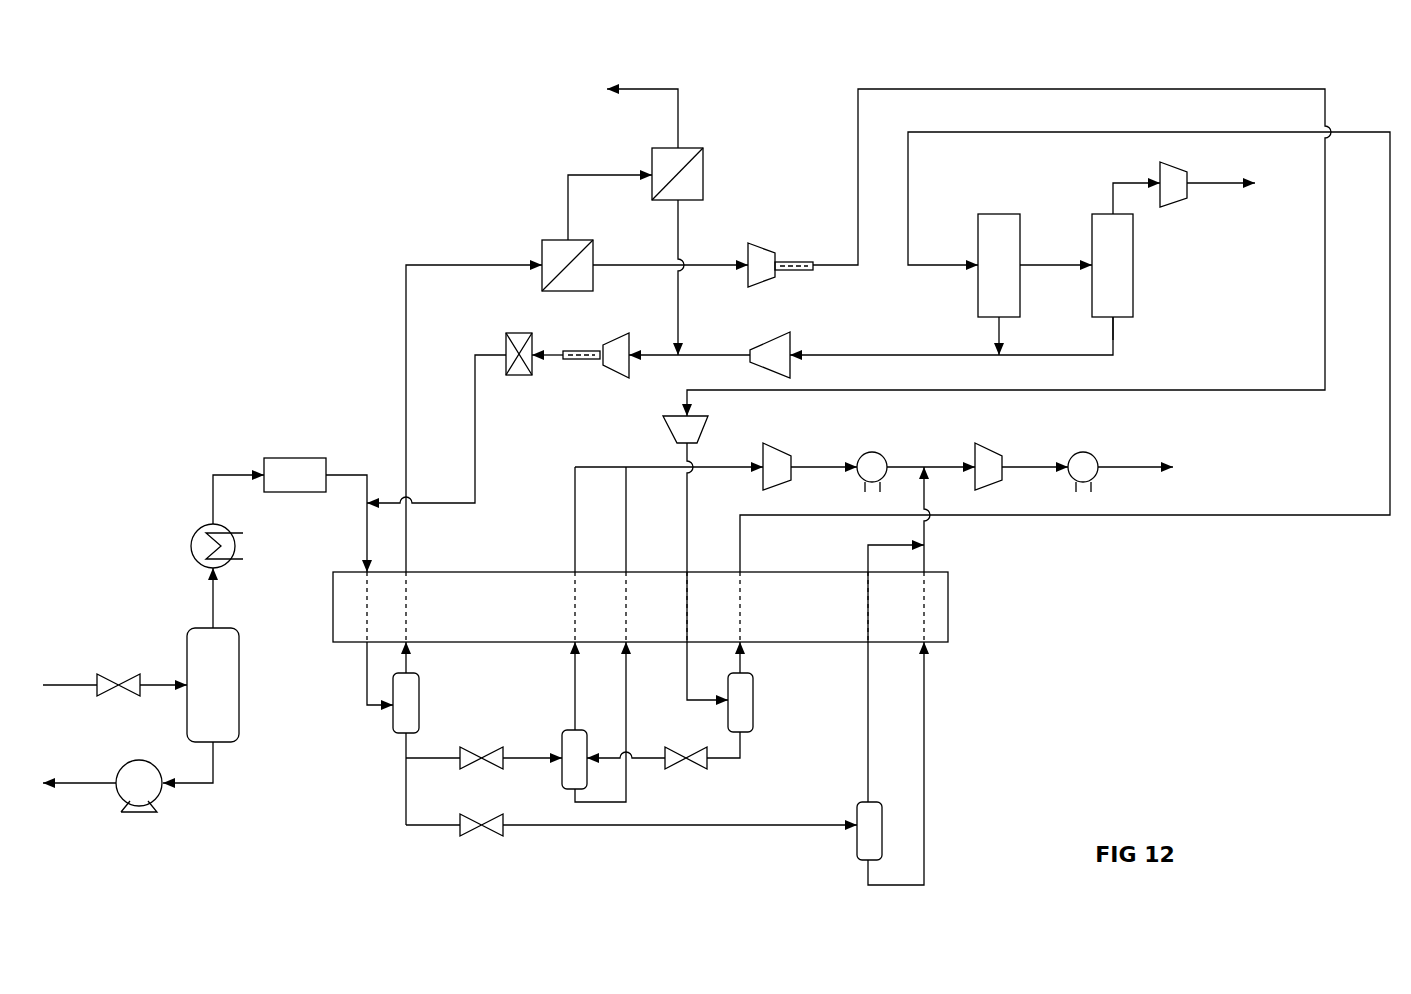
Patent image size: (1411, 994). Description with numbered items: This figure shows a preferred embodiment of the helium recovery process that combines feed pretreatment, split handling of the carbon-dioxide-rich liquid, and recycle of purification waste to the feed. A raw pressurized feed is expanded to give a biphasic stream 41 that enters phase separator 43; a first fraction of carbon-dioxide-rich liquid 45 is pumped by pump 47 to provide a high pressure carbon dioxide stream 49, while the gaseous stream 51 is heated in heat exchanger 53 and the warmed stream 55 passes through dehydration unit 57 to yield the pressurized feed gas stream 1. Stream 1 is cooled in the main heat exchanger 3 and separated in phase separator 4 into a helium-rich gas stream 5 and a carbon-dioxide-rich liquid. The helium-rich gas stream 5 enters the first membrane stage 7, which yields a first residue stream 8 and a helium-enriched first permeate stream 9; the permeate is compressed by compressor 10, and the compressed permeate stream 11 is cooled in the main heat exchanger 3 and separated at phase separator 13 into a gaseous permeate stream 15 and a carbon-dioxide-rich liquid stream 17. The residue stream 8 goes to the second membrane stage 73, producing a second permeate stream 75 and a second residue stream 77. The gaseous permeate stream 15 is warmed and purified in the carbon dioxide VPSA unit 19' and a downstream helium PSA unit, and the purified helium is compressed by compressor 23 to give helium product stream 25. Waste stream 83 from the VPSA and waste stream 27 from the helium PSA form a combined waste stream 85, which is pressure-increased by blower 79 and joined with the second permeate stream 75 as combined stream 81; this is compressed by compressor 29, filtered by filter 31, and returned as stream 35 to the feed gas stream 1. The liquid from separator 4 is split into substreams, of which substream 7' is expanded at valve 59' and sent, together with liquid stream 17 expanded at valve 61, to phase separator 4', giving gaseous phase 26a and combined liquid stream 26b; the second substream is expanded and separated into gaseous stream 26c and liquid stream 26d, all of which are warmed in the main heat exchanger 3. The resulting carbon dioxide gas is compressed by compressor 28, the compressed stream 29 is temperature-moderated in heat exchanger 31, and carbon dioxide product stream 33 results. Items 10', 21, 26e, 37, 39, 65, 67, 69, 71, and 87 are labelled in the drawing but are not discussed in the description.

The pressurized feed gas stream 1 is at (366, 541).
The main heat exchanger 3 is at (347, 615).
The phase separator 4 is at (376, 689).
The phase separator 4' is at (575, 729).
The helium-rich gas stream 5 is at (405, 375).
The first membrane stage 7 is at (474, 512).
The substream 7' is at (434, 783).
The first residue stream 8 is at (568, 195).
The first permeate stream 9 is at (676, 264).
The compressor 10 is at (661, 437).
The expansion turbine 10' is at (776, 240).
The compressed permeate stream 11 is at (686, 513).
The phase separator 13 is at (742, 700).
The gaseous permeate stream 15 is at (826, 516).
The carbon dioxide-rich liquid stream 17 is at (743, 748).
The CO2 VPSA unit 19' is at (1013, 258).
The product line 21 is at (1133, 182).
The compressor 23 is at (1175, 188).
The helium product stream 25 is at (1218, 185).
The gaseous phase 26a is at (573, 495).
The combined liquid stream 26b is at (625, 495).
The gaseous stream 26c is at (868, 722).
The flash gas line 26d is at (924, 722).
The flash gas line 26e is at (924, 490).
The waste stream 27 is at (1113, 336).
The compressor 28 is at (988, 457).
The compressor 29 is at (1022, 468).
The filter 31 is at (1087, 462).
The CO2 product stream 33 is at (1128, 470).
The stream 35 is at (474, 408).
The feed line 37 is at (82, 688).
The expansion valve 39 is at (125, 676).
The biphasic stream 41 is at (163, 688).
The phase separator 43 is at (226, 675).
The CO2 rich liquid 45 is at (215, 765).
The pump 47 is at (148, 788).
The high pressure CO2 stream 49 is at (90, 786).
The stream of gaseous phase 51 is at (215, 604).
The heat exchanger 53 is at (206, 545).
The warmed stream 55 is at (230, 466).
The dehydration unit 57 is at (300, 470).
The valve 59' is at (505, 723).
The valve 61 is at (673, 765).
The gas line 65 is at (722, 478).
The compressor 67 is at (778, 462).
The motor 69 is at (872, 460).
The gas line 71 is at (942, 465).
The second membrane stage 73 is at (703, 180).
The second permeate stream 75 is at (680, 228).
The second residue stream 77 is at (688, 108).
The blower 79 is at (770, 350).
The combined stream 81 is at (658, 350).
The waste stream 83 is at (996, 336).
The combined waste stream 85 is at (858, 352).
The flow element 87 is at (800, 272).